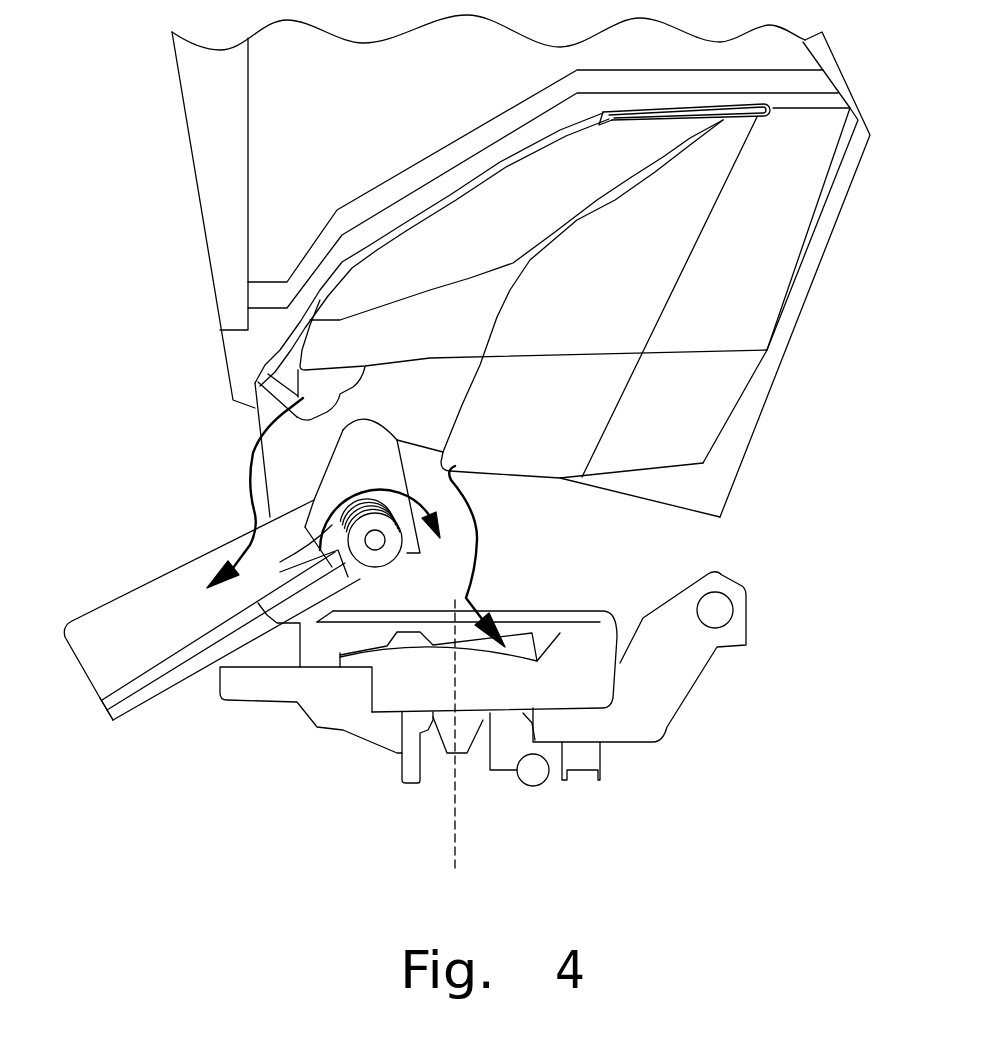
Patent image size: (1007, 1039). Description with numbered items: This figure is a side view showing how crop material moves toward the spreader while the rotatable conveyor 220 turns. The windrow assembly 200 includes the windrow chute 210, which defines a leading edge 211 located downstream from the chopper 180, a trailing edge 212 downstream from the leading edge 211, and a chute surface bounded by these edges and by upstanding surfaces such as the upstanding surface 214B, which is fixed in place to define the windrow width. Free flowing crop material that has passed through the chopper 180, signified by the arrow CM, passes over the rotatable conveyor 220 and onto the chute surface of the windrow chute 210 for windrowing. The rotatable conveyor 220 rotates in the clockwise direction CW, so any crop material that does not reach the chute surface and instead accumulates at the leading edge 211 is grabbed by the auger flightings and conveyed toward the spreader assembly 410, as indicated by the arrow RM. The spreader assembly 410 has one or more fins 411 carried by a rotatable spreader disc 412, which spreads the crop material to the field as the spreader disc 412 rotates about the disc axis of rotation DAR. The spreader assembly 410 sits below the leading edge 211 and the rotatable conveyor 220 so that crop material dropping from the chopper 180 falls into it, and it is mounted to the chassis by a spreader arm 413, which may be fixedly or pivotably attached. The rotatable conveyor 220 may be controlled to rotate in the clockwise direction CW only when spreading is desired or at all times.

The chopper 180 is at (730, 293).
The windrow assembly 200 is at (238, 515).
The windrow chute 210 is at (102, 717).
The leading edge 211 is at (292, 553).
The trailing edge 212 is at (110, 712).
The upstanding surface 214B is at (175, 630).
The rotatable conveyor 220 is at (437, 549).
The spreader assembly 410 is at (578, 612).
The fin 411 is at (522, 642).
The spreader disc 412 is at (449, 745).
The spreader arm 413 is at (669, 690).
The clockwise direction CW is at (367, 480).
The crop material arrow CM is at (248, 480).
The conveyance movement arrow RM is at (478, 546).
The disc axis of rotation DAR is at (458, 830).